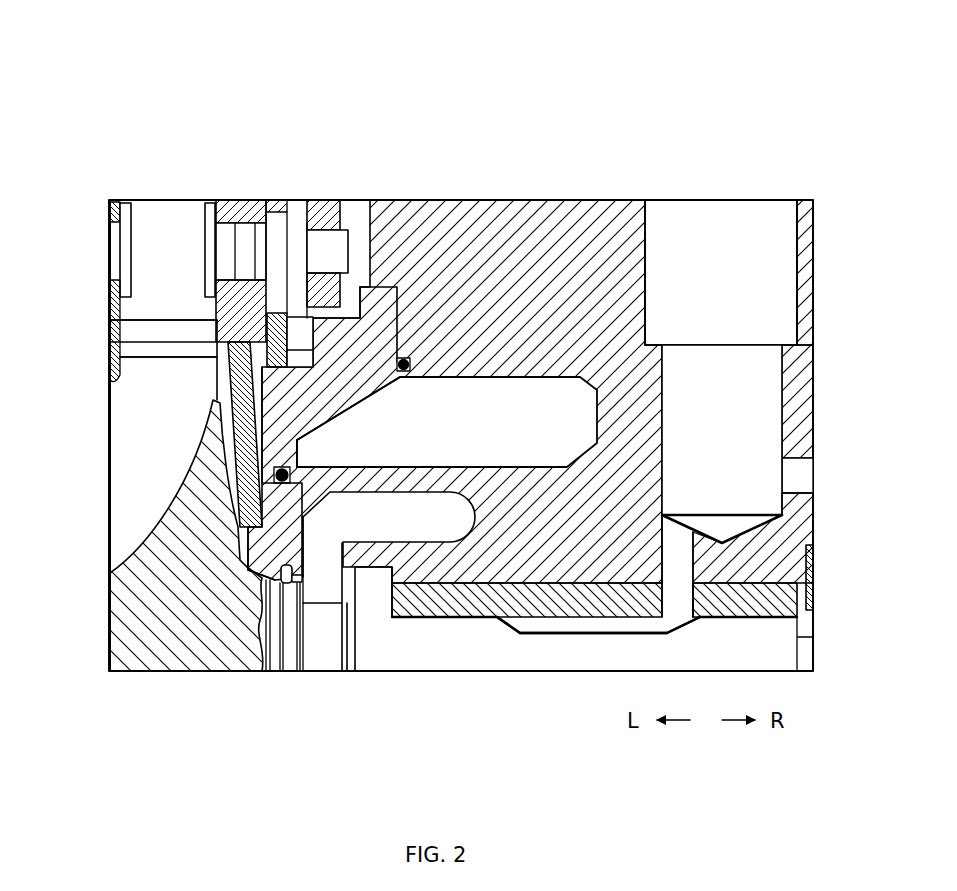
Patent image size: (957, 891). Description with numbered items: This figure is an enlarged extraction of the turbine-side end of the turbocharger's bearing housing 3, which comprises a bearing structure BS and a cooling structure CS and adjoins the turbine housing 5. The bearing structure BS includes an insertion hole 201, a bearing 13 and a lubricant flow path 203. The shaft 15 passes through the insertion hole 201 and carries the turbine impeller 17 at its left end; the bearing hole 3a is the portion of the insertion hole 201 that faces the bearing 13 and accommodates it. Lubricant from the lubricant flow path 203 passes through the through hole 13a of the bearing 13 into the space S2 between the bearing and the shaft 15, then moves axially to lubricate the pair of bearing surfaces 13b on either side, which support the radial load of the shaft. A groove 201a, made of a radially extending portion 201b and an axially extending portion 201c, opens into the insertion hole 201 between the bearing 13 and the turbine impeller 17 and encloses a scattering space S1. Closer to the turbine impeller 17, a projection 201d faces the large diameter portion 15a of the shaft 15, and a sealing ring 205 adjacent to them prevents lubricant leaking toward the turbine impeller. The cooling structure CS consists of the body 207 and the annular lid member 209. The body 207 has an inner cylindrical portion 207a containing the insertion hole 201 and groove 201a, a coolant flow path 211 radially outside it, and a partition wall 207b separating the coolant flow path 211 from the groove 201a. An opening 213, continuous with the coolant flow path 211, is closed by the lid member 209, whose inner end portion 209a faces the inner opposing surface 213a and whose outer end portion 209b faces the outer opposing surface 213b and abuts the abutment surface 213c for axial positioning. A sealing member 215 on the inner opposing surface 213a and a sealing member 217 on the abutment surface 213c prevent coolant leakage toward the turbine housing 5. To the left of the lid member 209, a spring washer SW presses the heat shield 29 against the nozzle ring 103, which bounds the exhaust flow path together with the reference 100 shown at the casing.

The bearing housing 3 is at (626, 200).
The bearing hole 3a is at (812, 580).
The turbine housing 5 is at (100, 176).
The bearing 13 is at (770, 605).
The through hole 13a is at (687, 600).
The bearing surfaces 13b is at (740, 618).
The shaft 15 is at (523, 650).
The large diameter portion 15a is at (297, 660).
The turbine impeller 17 is at (191, 650).
The heat shield 29 is at (238, 377).
The casing 100 is at (139, 176).
The nozzle ring 103 is at (243, 200).
The insertion hole 201 is at (300, 590).
The groove 201a is at (423, 533).
The radially extending portion 201b is at (258, 640).
The axially extending portion 201c is at (374, 530).
The projection 201d is at (270, 540).
The lubricant flow path 203 is at (797, 272).
The sealing ring 205 is at (281, 571).
The body 207 is at (582, 200).
The inner cylindrical portion 207a is at (640, 522).
The partition wall 207b is at (580, 527).
The lid member 209 is at (293, 298).
The inner end portion 209a is at (274, 480).
The outer end portion 209b is at (355, 305).
The coolant flow path 211 is at (503, 377).
The opening 213 is at (412, 325).
The inner opposing surface 213a is at (340, 440).
The outer opposing surface 213b is at (386, 283).
The abutment surface 213c is at (408, 356).
The sealing member 215 is at (343, 487).
The sealing member 217 is at (262, 400).
The bearing structure BS is at (731, 126).
The cooling structure CS is at (765, 61).
The scattering space S1 is at (325, 548).
The space S2 is at (590, 632).
The spring washer SW is at (292, 335).